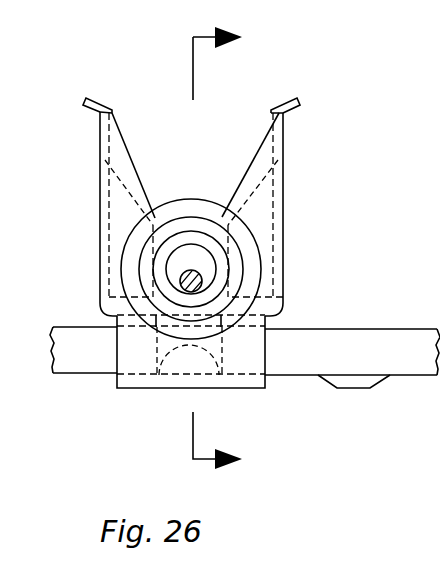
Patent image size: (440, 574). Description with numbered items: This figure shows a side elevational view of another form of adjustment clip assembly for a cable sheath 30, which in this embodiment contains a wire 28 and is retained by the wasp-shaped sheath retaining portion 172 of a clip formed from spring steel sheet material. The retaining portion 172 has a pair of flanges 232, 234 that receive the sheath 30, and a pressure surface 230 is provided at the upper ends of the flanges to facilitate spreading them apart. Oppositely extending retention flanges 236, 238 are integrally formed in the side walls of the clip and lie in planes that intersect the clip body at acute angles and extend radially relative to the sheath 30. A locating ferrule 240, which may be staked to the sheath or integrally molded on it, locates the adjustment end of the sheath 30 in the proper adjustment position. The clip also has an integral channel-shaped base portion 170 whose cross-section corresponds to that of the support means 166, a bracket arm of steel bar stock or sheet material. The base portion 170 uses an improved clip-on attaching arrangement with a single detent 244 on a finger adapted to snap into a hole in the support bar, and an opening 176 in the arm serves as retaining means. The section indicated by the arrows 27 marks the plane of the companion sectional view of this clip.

The section line 27- 27 is at (235, 248).
The wire 28 is at (178, 273).
The sheath 30 is at (236, 274).
The support means 166 is at (81, 374).
The base portion 170 is at (268, 389).
The sheath retaining portion 172 is at (285, 192).
The opening 176 is at (357, 389).
The pressure surface 230 is at (286, 99).
The flange 232 is at (100, 212).
The flange 234 is at (285, 248).
The retention flange 236 is at (139, 194).
The retention flange 238 is at (240, 208).
The locating ferrule 240 is at (259, 233).
The detent 244 is at (180, 356).